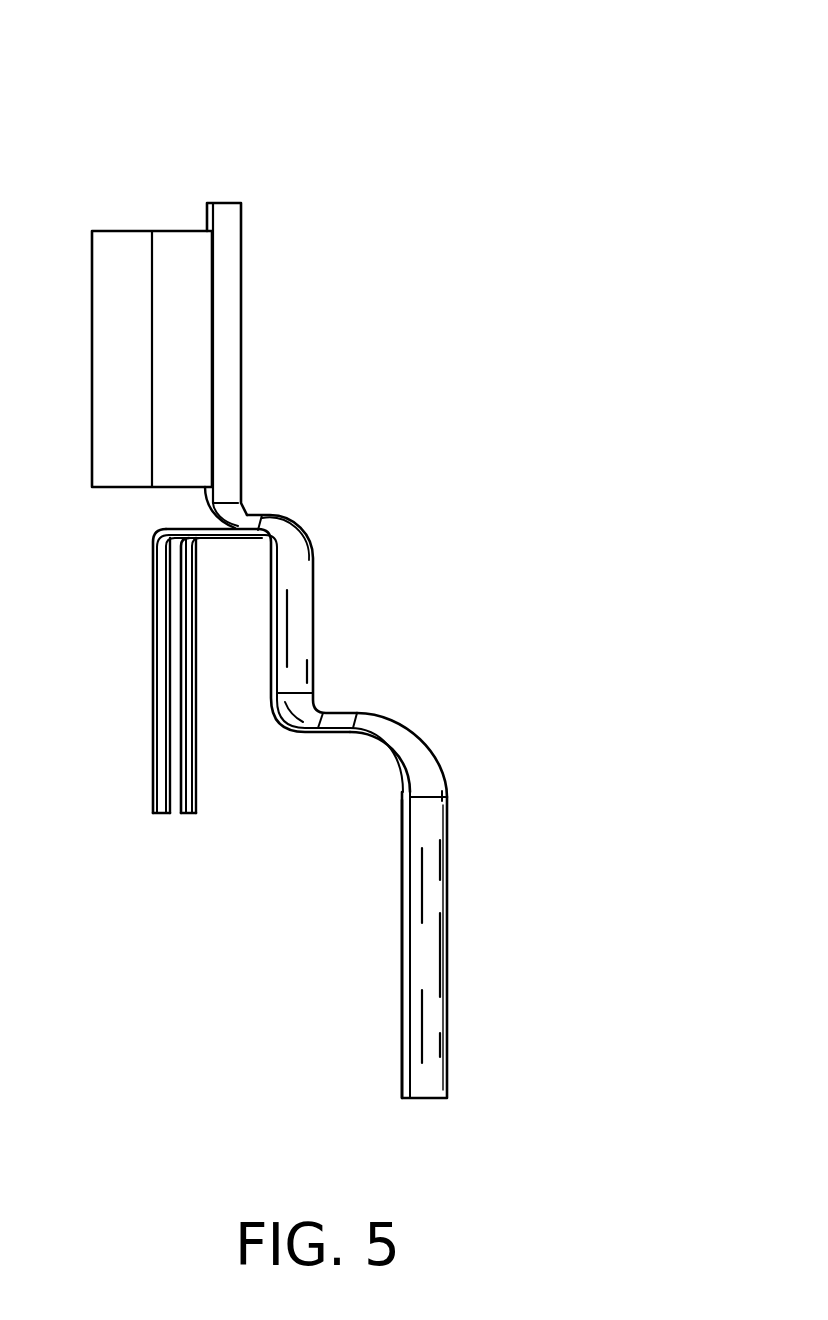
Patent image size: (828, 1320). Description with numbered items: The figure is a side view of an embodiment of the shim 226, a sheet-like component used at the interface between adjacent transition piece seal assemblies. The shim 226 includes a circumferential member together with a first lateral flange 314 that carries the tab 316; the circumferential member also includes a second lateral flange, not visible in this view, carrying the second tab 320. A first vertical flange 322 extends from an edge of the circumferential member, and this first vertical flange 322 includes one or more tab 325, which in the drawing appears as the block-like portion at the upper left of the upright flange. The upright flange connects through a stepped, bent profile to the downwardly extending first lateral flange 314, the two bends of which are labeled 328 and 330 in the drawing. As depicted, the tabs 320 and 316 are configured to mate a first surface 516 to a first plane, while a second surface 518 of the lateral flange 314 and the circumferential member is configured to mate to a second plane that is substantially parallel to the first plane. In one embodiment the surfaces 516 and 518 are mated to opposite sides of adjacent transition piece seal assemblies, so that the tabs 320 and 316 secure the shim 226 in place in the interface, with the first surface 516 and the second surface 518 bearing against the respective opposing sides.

The shim 226 is at (480, 70).
The tab 325 is at (125, 248).
The first vertical flange 322 is at (243, 295).
The first bend portion 328 is at (290, 515).
The second bend portion 330 is at (403, 715).
The first lateral flange 314 is at (430, 898).
The tab 316 is at (152, 667).
The second tab 320 is at (197, 797).
The first surface 516 is at (167, 693).
The second surface 518 is at (403, 958).